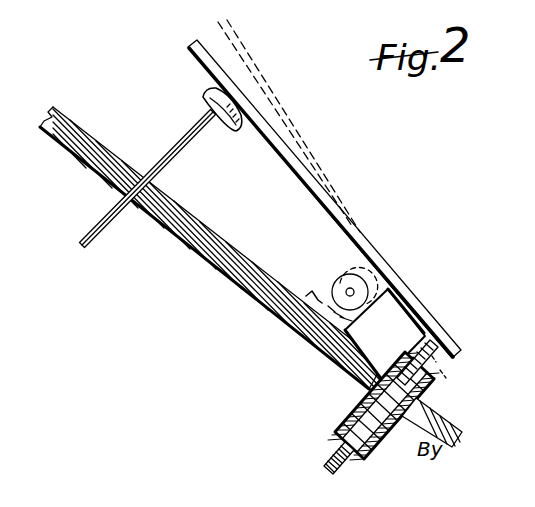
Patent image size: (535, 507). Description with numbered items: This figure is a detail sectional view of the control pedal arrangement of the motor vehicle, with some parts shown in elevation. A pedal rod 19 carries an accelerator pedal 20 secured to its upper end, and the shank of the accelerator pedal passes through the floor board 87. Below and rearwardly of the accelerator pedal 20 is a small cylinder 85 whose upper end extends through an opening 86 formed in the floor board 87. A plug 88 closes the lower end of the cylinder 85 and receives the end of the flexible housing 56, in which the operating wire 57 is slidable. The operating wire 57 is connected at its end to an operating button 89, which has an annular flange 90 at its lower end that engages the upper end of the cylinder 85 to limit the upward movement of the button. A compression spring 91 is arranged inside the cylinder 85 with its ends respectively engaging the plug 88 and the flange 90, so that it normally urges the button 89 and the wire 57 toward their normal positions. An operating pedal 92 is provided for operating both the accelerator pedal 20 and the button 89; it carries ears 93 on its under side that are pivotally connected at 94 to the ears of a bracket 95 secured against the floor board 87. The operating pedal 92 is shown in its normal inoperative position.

The pedal rod 19 is at (168, 156).
The accelerator pedal 20 is at (205, 88).
The flexible housing 56 is at (330, 463).
The operating wire 57 is at (362, 394).
The cylinder 85 is at (358, 410).
The opening 86 is at (433, 410).
The floor board 87 is at (248, 262).
The plug 88 is at (352, 458).
The operating button 89 is at (412, 330).
The annular flange 90 is at (392, 362).
The compression spring 91 is at (392, 442).
The operating pedal 92 is at (328, 205).
The ears 93 is at (363, 272).
The pivotal connection 94 is at (348, 288).
The bracket 95 is at (317, 298).